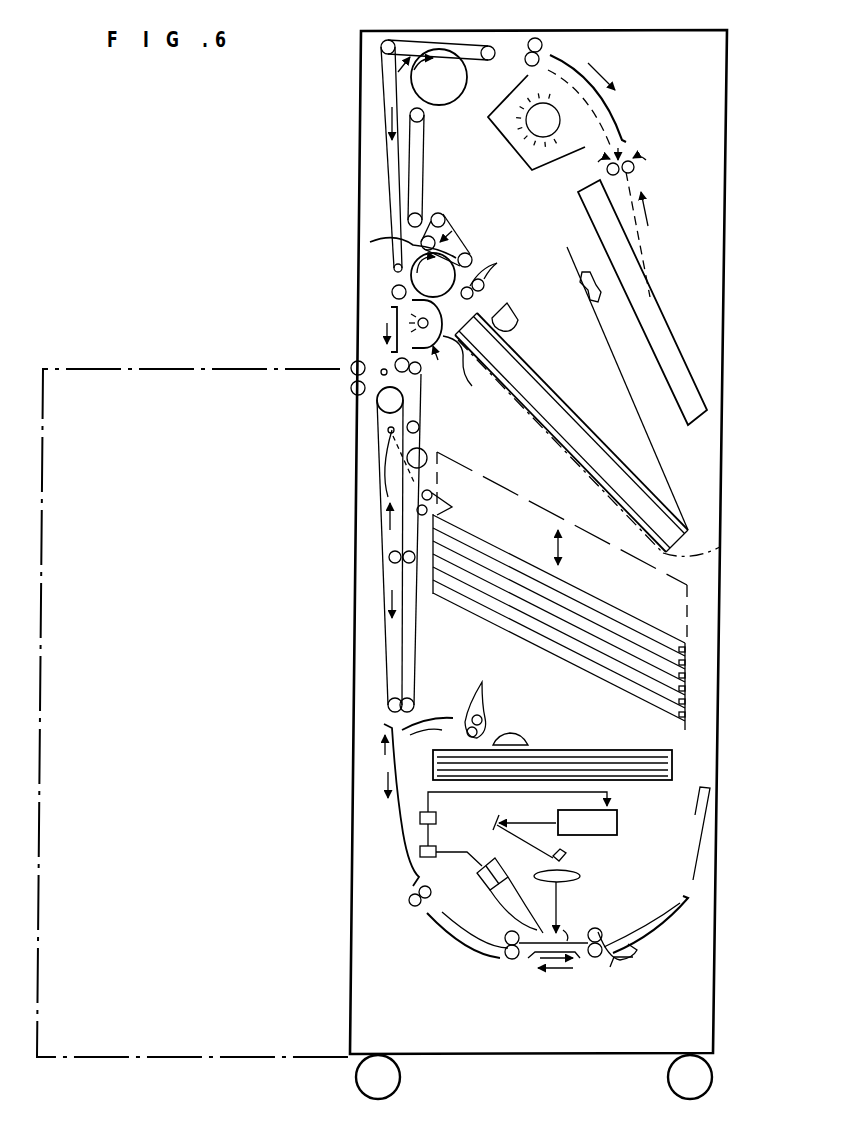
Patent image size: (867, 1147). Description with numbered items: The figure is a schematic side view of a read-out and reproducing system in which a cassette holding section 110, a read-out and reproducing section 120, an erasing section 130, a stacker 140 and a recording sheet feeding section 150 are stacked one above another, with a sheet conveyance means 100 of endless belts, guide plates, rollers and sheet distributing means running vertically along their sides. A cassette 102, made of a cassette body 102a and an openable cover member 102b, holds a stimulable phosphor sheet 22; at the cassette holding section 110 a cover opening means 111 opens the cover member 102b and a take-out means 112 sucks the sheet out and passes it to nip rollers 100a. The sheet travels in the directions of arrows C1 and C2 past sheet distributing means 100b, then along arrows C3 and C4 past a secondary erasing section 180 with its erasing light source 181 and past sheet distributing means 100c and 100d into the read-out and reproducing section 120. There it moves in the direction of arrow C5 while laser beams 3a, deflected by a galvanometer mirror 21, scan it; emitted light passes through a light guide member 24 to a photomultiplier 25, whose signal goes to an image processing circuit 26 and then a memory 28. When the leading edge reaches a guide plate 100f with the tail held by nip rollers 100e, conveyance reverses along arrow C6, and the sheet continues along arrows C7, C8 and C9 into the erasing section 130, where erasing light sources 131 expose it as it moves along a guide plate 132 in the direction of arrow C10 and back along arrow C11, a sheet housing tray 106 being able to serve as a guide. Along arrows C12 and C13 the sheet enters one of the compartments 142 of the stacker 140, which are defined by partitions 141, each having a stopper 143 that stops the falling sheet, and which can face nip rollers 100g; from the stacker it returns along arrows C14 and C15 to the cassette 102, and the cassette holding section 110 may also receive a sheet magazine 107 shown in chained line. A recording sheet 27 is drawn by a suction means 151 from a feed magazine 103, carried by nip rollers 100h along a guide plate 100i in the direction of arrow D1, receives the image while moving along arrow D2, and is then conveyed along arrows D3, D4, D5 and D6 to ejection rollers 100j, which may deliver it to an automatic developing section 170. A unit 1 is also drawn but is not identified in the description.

The control unit 1 is at (618, 822).
The laser beam 3a is at (578, 878).
The galvanometer mirror 21 is at (573, 853).
The stimulable phosphor sheet 22 is at (537, 378).
The light guide member 24 is at (550, 863).
The photomultiplier 25 is at (478, 875).
The image processing circuit 26 is at (420, 852).
The recording sheet 27 is at (552, 744).
The memory 28 is at (420, 818).
The sheet conveyance means 100 is at (418, 42).
The nip rollers 100a is at (497, 263).
The sheet distributing means 100b is at (370, 242).
The sheet distributing means 100c is at (370, 403).
The sheet distributing means 100d is at (380, 462).
The nip rollers 100e is at (633, 957).
The guide plate 100f is at (703, 838).
The nip rollers 100g is at (452, 507).
The nip rollers 100h is at (482, 682).
The guide plate 100i is at (403, 723).
The ejection rollers 100j is at (350, 380).
The cassette 102 is at (571, 400).
The cassette body 102a is at (527, 400).
The cover member 102b is at (630, 395).
The recording sheet feed magazine 103 is at (612, 750).
The stimulable phosphor sheet housing tray 106 is at (693, 380).
The stimulable phosphor sheet magazine 107 is at (720, 547).
The cassette holding section 110 is at (693, 478).
The cover opening means 111 is at (590, 292).
The stimulable phosphor sheet take-out means 112 is at (505, 306).
The read-out and reproducing section 120 is at (693, 767).
The erasing section 130 is at (515, 121).
The erasing light sources 131 is at (550, 140).
The guide plate 132 is at (620, 125).
The stacker 140 is at (604, 622).
The partitions 141 is at (602, 612).
The stimulable phosphor sheet housing compartment 142 is at (660, 628).
The stopper 143 is at (688, 650).
The recording sheet feeding section 150 is at (518, 712).
The suction means 151 is at (520, 730).
The automatic developing section 170 is at (222, 625).
The secondary erasing section 180 is at (447, 370).
The erasing light source 181 is at (475, 374).
The arrow C1 is at (453, 229).
The arrow C2 is at (360, 326).
The arrow C3 is at (392, 600).
The arrow C4 is at (388, 780).
The arrow C5 is at (578, 978).
The arrow C6 is at (525, 1000).
The arrow C7 is at (332, 747).
The arrow C8 is at (350, 538).
The arrow C9 is at (439, 77).
The arrow C10 is at (604, 70).
The arrow C11 is at (650, 210).
The arrow C12 is at (392, 116).
The arrow C13 is at (387, 323).
The arrow C14 is at (421, 450).
The arrow C15 is at (398, 285).
The arrow D1 is at (425, 717).
The arrow D2 is at (560, 966).
The arrow D3 is at (540, 970).
The arrow D4 is at (380, 753).
The arrow D5 is at (380, 528).
The arrow D6 is at (418, 424).